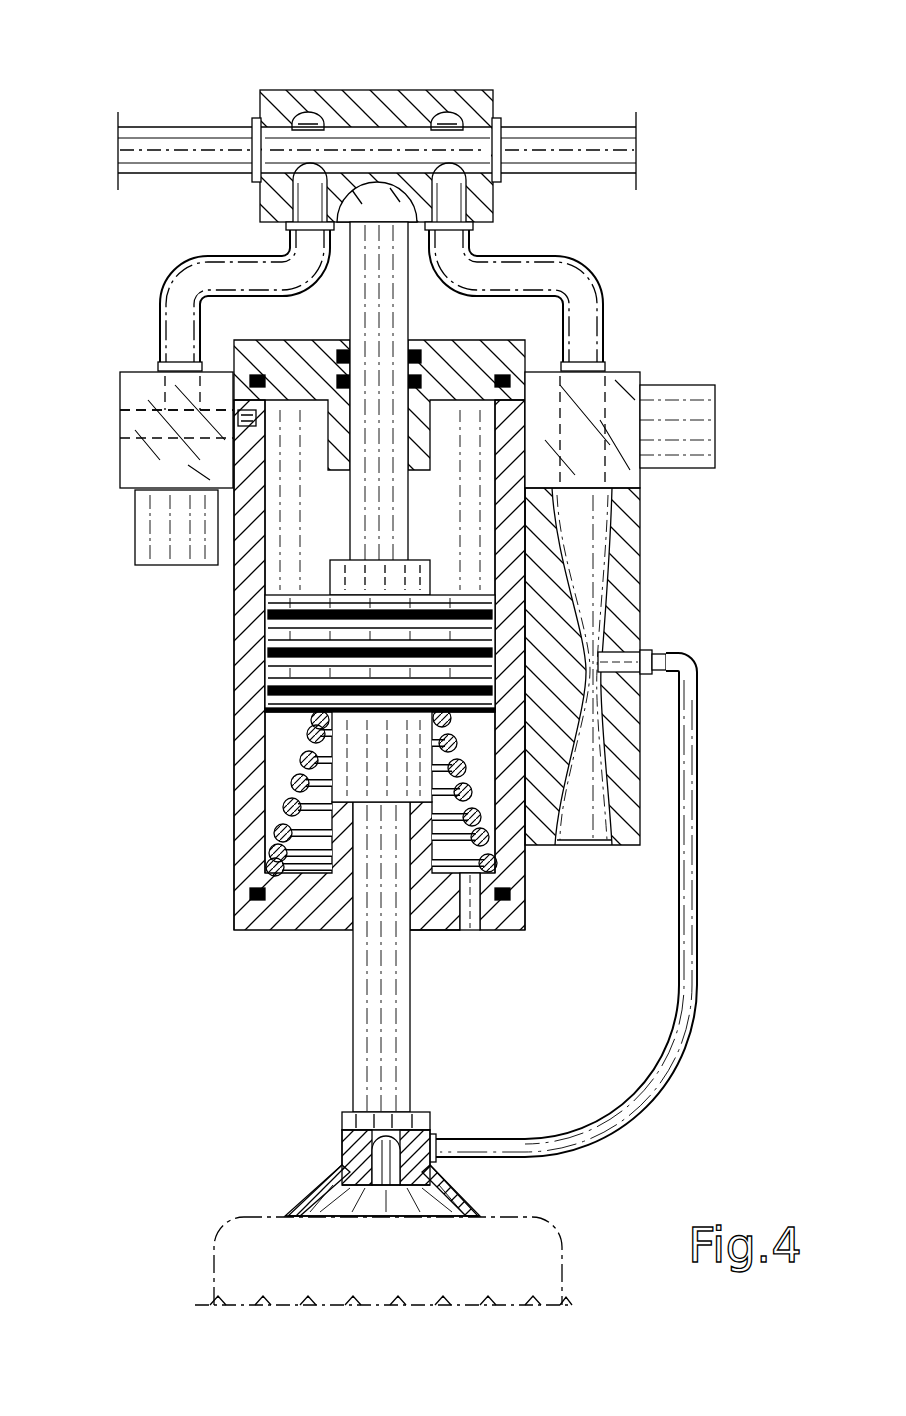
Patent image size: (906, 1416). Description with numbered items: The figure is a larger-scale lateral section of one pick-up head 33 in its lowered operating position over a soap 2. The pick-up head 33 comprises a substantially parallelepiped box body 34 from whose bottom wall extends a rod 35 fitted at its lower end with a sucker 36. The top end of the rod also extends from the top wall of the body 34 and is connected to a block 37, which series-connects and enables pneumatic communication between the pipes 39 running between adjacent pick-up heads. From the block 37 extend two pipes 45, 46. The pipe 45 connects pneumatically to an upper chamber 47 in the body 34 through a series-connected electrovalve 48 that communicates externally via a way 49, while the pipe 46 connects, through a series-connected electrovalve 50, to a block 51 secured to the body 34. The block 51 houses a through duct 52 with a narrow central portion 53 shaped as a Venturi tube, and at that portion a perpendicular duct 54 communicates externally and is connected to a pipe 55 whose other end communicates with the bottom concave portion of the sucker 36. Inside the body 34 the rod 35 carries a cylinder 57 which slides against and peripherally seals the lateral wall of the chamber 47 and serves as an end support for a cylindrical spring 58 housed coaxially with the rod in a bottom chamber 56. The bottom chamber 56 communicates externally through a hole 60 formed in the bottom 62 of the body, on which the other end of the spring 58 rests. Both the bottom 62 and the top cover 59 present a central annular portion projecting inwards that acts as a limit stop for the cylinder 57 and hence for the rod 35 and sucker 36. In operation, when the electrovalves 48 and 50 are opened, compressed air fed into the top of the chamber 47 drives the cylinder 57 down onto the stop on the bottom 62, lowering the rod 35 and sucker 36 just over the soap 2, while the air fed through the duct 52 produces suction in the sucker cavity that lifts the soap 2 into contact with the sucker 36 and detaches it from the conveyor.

The soap 2 is at (212, 1266).
The pick-up head 33 is at (287, 611).
The box body 34 is at (331, 611).
The rod 35 is at (395, 300).
The sucker 36 is at (311, 1180).
The block 37 is at (380, 105).
The pipes 39 is at (190, 150).
The pipe 45 is at (200, 282).
The pipe 46 is at (578, 282).
The upper chamber 47 is at (285, 548).
The electrovalve 48 is at (135, 375).
The way 49 is at (120, 428).
The electrovalve 50 is at (625, 385).
The block 51 is at (617, 704).
The through duct 52 is at (588, 808).
The narrow central portion 53 is at (612, 650).
The perpendicular duct 54 is at (665, 660).
The pipe 55 is at (690, 778).
The bottom chamber 56 is at (280, 737).
The cylinder 57 is at (290, 633).
The cylindrical spring 58 is at (300, 778).
The top cover 59 is at (295, 360).
The hole 60 is at (478, 905).
The bottom 62 is at (440, 905).